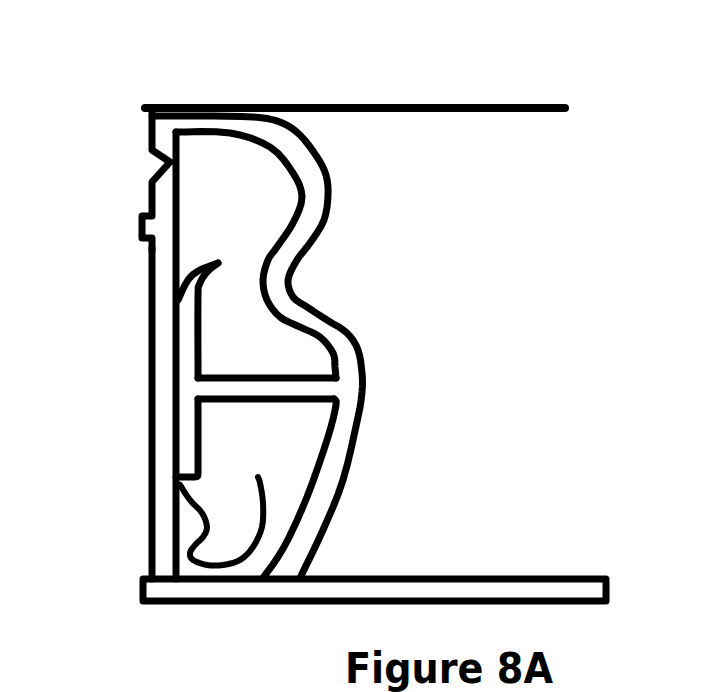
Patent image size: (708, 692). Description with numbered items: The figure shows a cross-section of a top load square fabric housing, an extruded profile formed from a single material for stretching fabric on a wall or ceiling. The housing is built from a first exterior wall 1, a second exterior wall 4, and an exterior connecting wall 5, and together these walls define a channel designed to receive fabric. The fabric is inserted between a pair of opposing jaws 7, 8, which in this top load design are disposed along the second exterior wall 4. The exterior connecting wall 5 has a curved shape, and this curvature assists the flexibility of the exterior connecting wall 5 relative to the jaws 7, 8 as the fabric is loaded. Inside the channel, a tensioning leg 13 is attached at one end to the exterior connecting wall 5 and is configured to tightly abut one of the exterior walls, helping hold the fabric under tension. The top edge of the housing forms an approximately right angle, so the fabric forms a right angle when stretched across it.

The first exterior wall 1 is at (465, 588).
The second exterior wall 4 is at (158, 317).
The exterior connecting wall 5 is at (308, 308).
The jaw 7 is at (158, 165).
The jaw 8 is at (165, 137).
The tensioning leg 13 is at (187, 430).